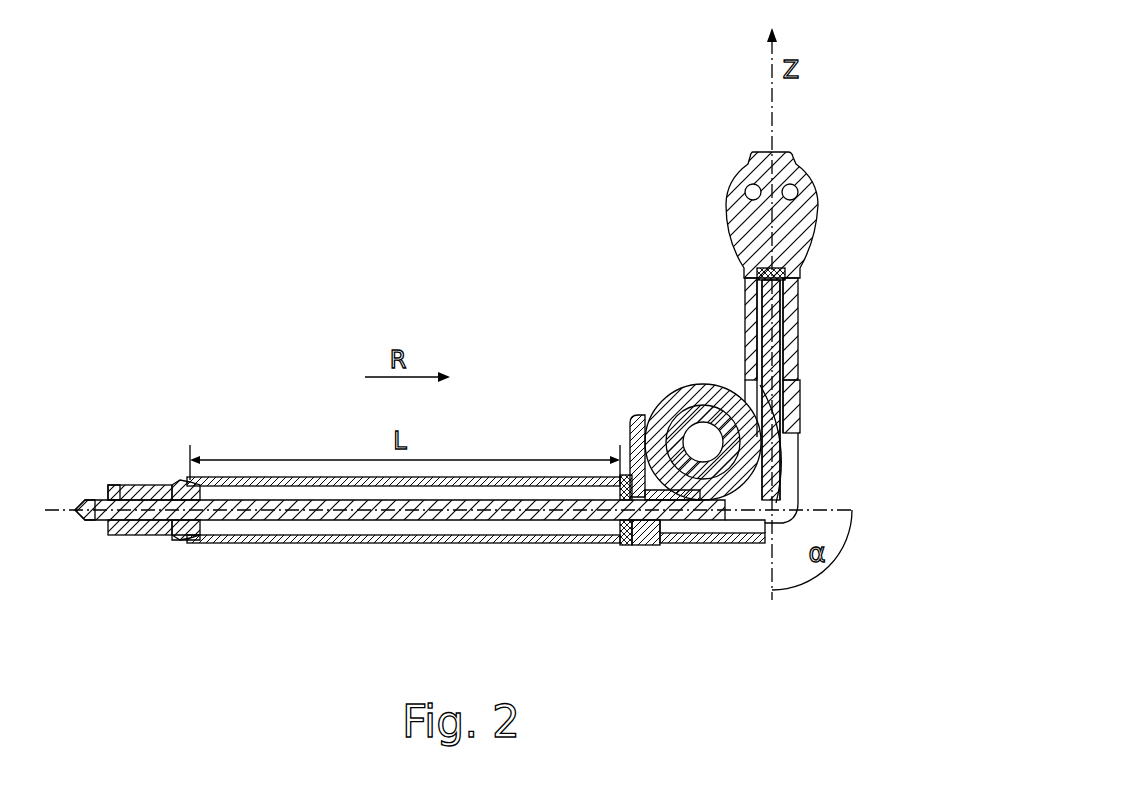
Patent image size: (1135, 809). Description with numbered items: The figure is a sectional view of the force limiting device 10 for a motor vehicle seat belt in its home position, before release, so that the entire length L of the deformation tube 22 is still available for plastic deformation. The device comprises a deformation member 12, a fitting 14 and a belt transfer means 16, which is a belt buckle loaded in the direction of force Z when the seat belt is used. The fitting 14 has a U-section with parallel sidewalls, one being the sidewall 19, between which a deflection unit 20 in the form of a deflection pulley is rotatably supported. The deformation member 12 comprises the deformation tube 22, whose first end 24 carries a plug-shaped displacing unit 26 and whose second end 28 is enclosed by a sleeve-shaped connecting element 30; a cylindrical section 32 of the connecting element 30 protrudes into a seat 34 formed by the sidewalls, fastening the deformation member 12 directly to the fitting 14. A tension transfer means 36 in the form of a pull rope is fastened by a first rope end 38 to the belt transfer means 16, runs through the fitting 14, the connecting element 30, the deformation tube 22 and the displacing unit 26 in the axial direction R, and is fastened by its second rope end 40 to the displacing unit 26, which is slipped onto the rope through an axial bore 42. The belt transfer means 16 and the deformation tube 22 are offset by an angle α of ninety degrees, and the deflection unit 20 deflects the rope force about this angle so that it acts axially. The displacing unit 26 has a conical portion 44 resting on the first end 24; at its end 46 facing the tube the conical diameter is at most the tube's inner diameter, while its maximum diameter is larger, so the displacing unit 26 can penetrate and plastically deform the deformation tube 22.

The force limiting device 10 is at (431, 207).
The deformation member 12 is at (457, 552).
The fitting 14 is at (818, 405).
The belt transfer means 16 is at (844, 214).
The sidewall 19 is at (640, 426).
The deflection unit 20 is at (720, 546).
The deformation tube 22 is at (386, 522).
The first end 24 is at (180, 542).
The displacing unit 26 is at (150, 537).
The second end 28 is at (614, 546).
The connecting element 30 is at (628, 549).
The cylindrical section 32 is at (628, 456).
The seat 34 is at (650, 548).
The tension transfer means 36 is at (787, 451).
The first rope end 38 is at (799, 302).
The second rope end 40 is at (90, 523).
The axial bore 42 is at (118, 487).
The conical portion 44 is at (186, 484).
The end 46 is at (205, 539).